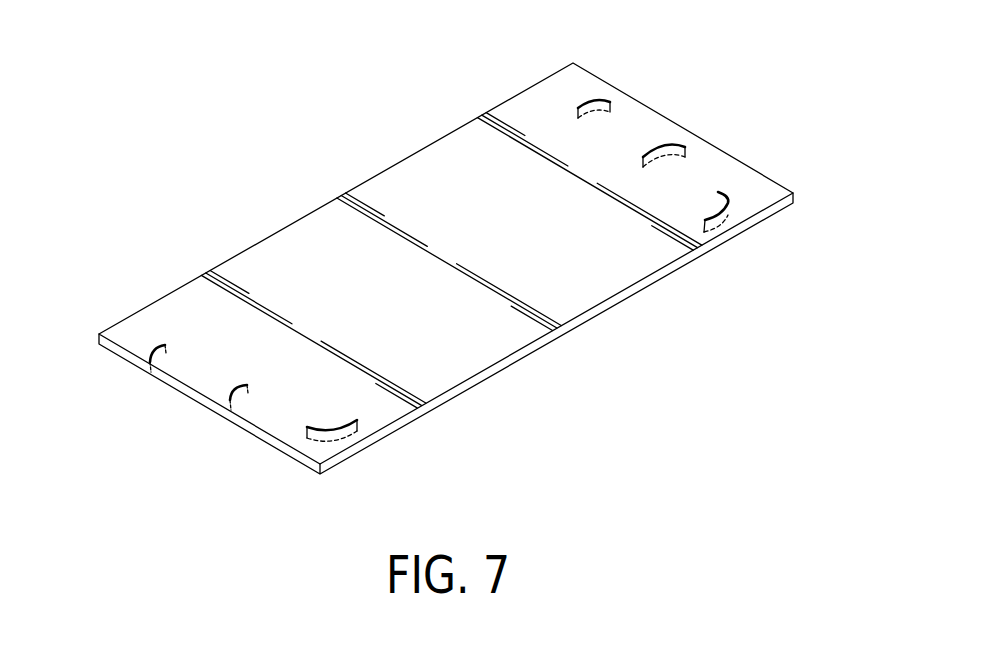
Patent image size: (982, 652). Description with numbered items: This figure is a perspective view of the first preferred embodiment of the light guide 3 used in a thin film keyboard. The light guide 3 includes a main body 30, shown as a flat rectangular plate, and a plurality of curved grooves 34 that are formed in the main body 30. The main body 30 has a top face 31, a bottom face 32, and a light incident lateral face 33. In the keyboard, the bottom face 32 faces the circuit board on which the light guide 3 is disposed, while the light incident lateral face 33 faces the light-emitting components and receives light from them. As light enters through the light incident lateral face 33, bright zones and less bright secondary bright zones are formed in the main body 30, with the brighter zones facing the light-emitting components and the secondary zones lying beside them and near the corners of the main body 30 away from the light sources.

The light guide 3 is at (451, 280).
The main body 30 is at (451, 280).
The top face 31 is at (334, 232).
The bottom face 32 is at (493, 381).
The light incident lateral face 33 is at (530, 352).
The curved grooves 34 is at (597, 97).